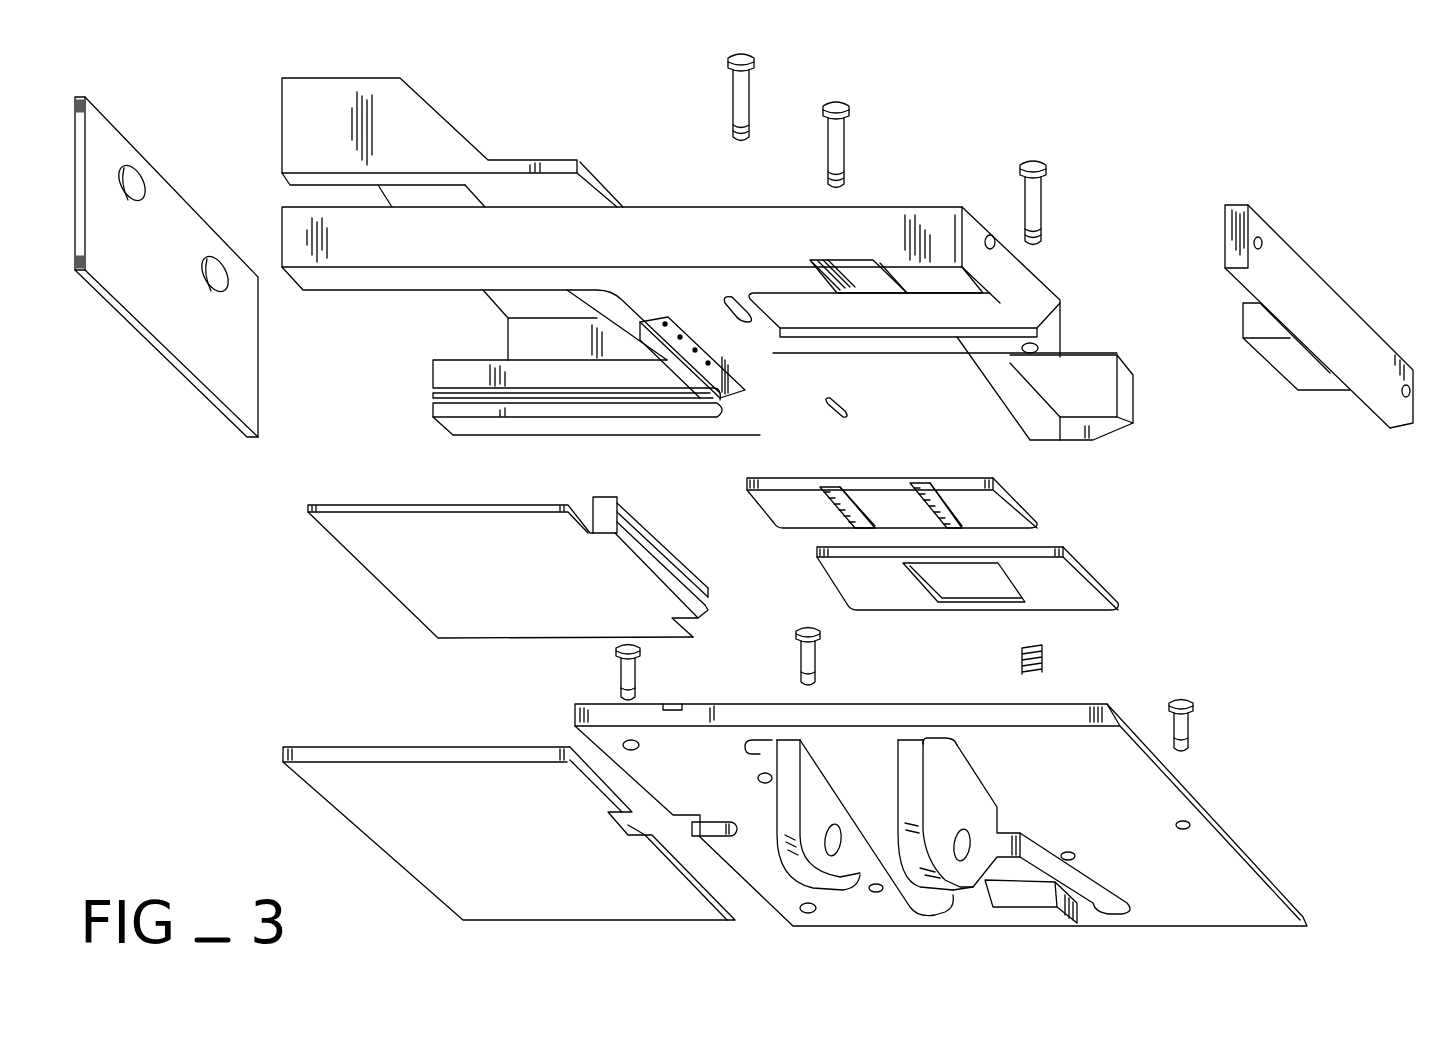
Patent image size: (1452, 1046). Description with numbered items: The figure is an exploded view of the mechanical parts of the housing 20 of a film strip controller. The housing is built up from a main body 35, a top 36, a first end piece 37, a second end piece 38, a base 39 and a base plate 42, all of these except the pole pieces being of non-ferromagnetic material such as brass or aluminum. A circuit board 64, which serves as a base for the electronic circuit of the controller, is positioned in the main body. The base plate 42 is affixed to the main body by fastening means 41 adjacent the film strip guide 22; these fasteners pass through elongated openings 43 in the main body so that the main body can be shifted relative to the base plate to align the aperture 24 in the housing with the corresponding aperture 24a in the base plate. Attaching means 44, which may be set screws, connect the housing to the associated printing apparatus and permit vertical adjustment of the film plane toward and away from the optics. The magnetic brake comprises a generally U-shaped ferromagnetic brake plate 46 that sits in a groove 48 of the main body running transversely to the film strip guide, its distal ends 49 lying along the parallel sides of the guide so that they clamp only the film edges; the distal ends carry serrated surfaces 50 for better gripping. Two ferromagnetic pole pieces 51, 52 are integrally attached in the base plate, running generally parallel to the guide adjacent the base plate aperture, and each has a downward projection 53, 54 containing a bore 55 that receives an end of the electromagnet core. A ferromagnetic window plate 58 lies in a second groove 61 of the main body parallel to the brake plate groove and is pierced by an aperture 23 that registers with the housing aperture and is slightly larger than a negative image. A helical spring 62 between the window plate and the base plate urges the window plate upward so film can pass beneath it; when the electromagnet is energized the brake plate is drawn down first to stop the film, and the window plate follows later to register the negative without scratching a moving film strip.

The housing 20 is at (1140, 168).
The film strip guide 22 is at (845, 268).
The aperture 23 is at (975, 578).
The aperture 24 is at (960, 387).
The aperture 24a is at (1055, 915).
The main body 35 is at (943, 205).
The top 36 is at (445, 120).
The first end piece 37 is at (1300, 252).
The second end piece 38 is at (172, 368).
The base 39 is at (325, 798).
The fastening means 41 is at (735, 88).
The base plate 42 is at (1233, 838).
The elongated openings 43 is at (738, 297).
The attaching means 44 is at (615, 668).
The U-shaped brake plate 46 is at (747, 478).
The groove 48 is at (1020, 305).
The distal ends 49 is at (838, 520).
The serrated surfaces 50 is at (822, 488).
The pole piece 51 is at (760, 748).
The pole piece 52 is at (950, 745).
The projection 53 is at (793, 855).
The projection 54 is at (913, 770).
The bore 55 is at (830, 838).
The window plate 58 is at (1100, 582).
The groove 61 is at (805, 390).
The helical spring 62 is at (1050, 660).
The circuit board 64 is at (340, 545).